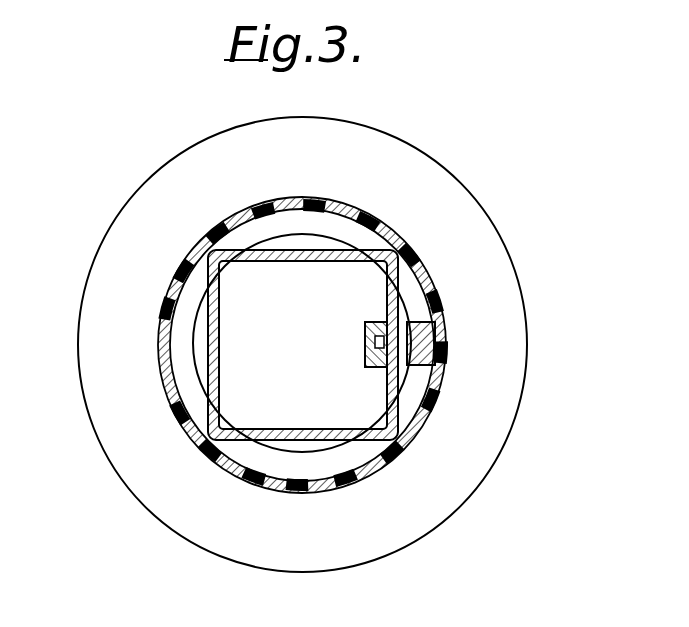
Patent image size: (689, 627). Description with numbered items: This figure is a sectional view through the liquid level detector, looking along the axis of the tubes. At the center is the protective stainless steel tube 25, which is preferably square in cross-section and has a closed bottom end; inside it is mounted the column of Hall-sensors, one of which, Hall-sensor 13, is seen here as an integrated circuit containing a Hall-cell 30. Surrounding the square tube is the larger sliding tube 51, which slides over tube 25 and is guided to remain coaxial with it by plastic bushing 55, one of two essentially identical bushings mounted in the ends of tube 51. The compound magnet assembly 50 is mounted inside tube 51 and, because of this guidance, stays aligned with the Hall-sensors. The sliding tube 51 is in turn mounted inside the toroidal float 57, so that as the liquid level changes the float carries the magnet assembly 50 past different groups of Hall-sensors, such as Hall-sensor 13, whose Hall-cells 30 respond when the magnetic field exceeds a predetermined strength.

The toroidal float 57 is at (453, 481).
The plastic bushing 55 is at (298, 222).
The tube 51 is at (192, 436).
The protective stainless steel tube 25 is at (210, 274).
The Hall-sensor 13 is at (378, 324).
The Hall-cell 30 is at (375, 342).
The compound magnet assembly 50 is at (430, 343).